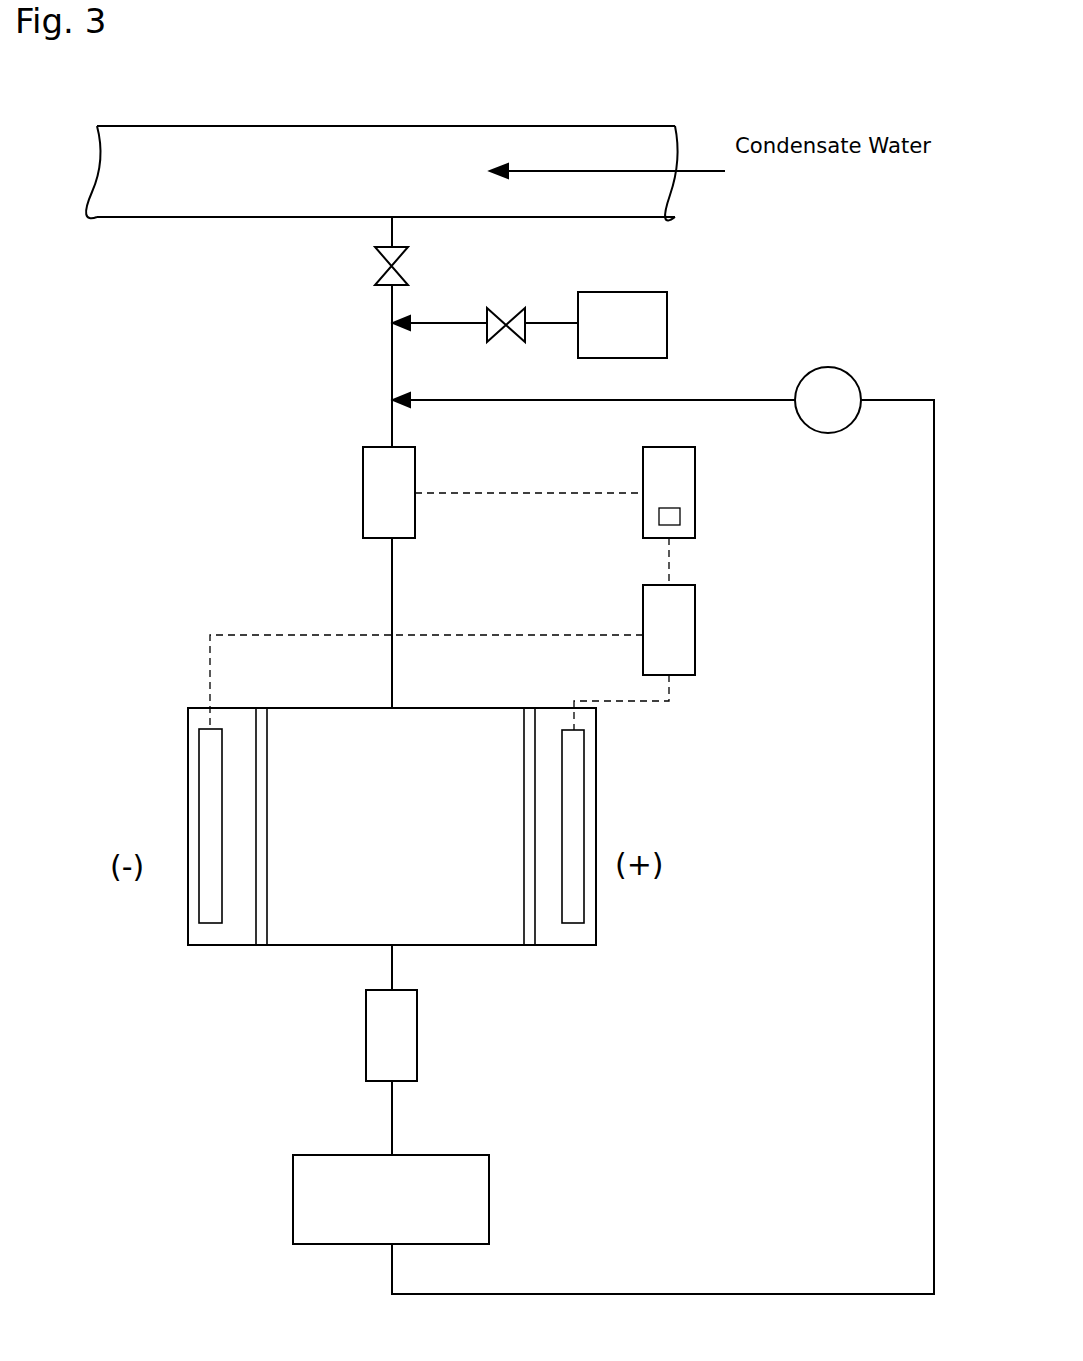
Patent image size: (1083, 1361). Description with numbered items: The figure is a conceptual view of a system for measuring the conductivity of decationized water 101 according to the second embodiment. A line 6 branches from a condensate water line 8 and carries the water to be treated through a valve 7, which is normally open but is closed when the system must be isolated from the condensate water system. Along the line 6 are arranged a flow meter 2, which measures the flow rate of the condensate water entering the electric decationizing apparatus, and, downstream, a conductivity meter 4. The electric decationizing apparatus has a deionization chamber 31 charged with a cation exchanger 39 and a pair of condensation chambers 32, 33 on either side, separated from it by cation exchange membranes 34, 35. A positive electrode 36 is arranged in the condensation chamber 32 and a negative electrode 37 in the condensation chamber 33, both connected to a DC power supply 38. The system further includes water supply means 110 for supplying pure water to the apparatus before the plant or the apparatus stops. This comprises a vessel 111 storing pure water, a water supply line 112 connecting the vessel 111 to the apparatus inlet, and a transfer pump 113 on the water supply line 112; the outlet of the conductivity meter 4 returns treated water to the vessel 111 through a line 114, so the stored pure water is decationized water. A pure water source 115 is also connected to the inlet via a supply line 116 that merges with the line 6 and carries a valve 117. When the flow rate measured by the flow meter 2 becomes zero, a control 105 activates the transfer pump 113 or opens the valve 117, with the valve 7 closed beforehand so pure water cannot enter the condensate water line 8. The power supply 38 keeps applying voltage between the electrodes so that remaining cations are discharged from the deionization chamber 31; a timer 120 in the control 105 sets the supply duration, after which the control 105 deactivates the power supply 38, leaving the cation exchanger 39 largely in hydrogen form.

The condensate water line 8 is at (243, 201).
The system for measuring the conductivity of decationized water 101 is at (234, 420).
The line 6 is at (393, 370).
The valve 7 is at (396, 270).
The valve 117 is at (498, 313).
The supply line 116 is at (544, 322).
The pure water source 115 is at (667, 328).
The water supply means 110 is at (813, 333).
The transfer pump 113 is at (851, 378).
The water supply line 112 is at (934, 893).
The flow meter 2 is at (415, 470).
The control 105 is at (695, 485).
The timer 120 is at (672, 517).
The DC power supply 38 is at (695, 633).
The condensation chamber 33 is at (221, 716).
The condensation chamber 32 is at (558, 730).
The cation exchanger 39 is at (392, 826).
The deionization chamber 31 is at (420, 712).
The cation exchange membrane 35 is at (265, 712).
The cation exchange membrane 34 is at (528, 710).
The negative electrode 37 is at (208, 812).
The positive electrode 36 is at (578, 810).
The conductivity meter 4 is at (410, 1025).
The line 114 is at (392, 1123).
The vessel 111 is at (475, 1200).